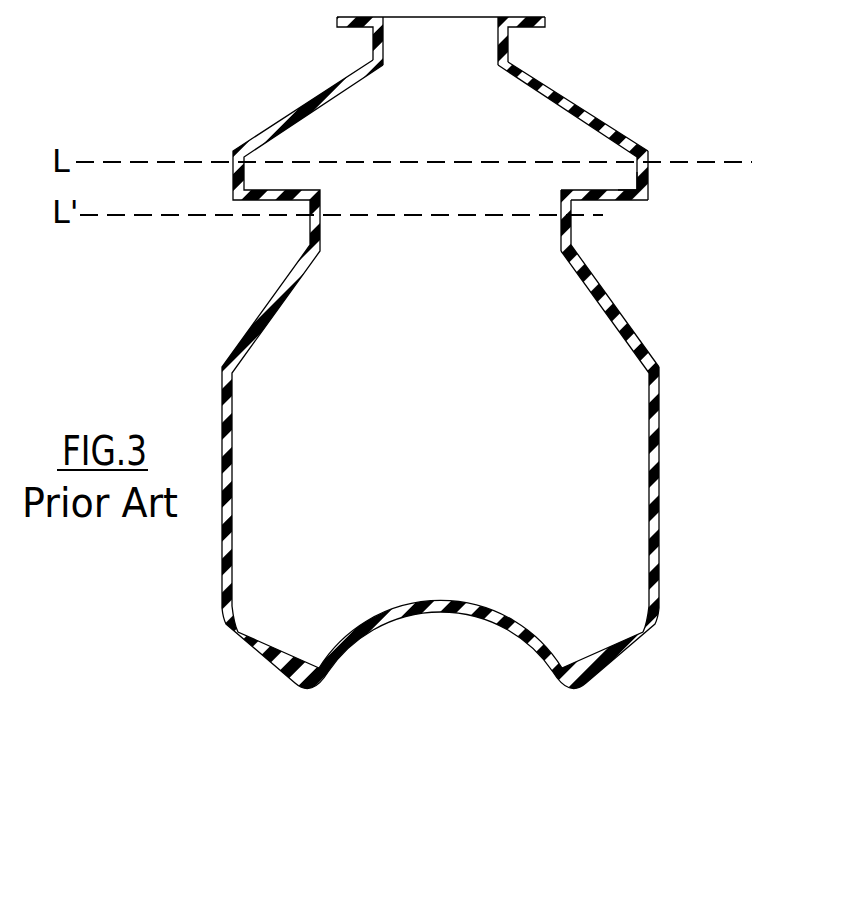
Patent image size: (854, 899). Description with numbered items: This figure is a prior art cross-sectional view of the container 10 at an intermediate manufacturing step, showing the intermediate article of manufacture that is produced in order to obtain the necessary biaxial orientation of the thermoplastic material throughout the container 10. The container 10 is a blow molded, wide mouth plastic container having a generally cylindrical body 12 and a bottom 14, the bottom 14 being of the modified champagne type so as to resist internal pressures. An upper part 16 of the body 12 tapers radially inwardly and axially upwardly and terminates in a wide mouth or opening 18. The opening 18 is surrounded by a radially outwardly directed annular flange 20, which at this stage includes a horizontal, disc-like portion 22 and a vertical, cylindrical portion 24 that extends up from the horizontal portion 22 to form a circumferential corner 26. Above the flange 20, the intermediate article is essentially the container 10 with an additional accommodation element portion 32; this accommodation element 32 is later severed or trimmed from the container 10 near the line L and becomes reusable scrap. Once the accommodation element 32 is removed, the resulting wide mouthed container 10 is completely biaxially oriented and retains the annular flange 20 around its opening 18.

The container 10 is at (688, 542).
The body 12 is at (660, 413).
The bottom 14 is at (367, 714).
The upper part 16 is at (631, 328).
The opening 18 is at (421, 176).
The annular flange 20 is at (682, 219).
The horizontal disc-like portion 22 is at (611, 200).
The vertical cylindrical portion 24 is at (651, 176).
The circumferential corner 26 is at (610, 175).
The accommodation element 32 is at (638, 103).